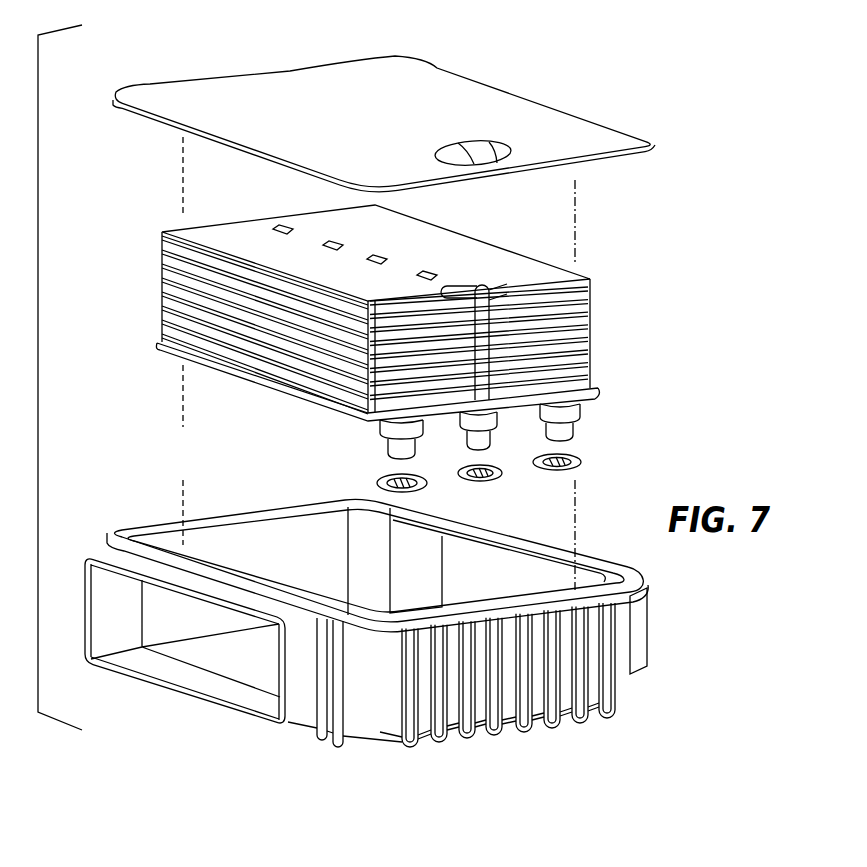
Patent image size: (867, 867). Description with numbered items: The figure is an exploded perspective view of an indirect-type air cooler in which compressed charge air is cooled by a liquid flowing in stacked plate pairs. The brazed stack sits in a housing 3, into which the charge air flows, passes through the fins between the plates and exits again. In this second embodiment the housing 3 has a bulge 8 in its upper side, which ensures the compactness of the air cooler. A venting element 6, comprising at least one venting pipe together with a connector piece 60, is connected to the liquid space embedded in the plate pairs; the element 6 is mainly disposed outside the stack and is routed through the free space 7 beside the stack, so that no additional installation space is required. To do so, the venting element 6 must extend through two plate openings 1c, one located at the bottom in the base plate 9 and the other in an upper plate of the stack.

The housing 3 is at (577, 148).
The bulge 8 is at (478, 142).
The venting element 6 is at (476, 286).
The free space 7 is at (493, 392).
The base plate 9 is at (598, 400).
The plate opening 1c is at (500, 404).
The connector piece 60 is at (497, 408).